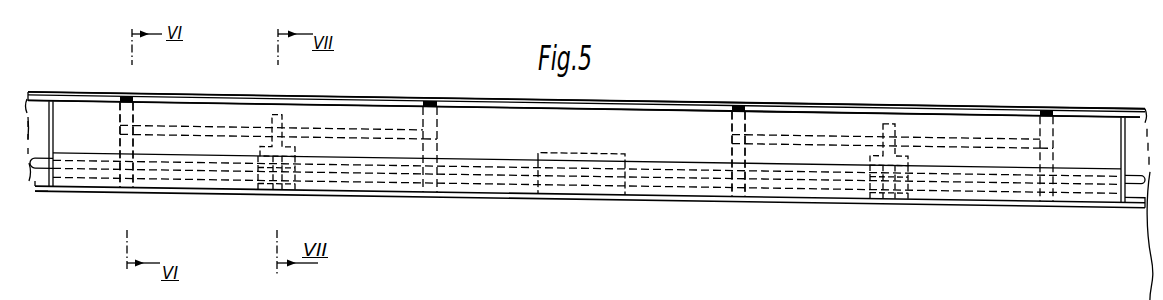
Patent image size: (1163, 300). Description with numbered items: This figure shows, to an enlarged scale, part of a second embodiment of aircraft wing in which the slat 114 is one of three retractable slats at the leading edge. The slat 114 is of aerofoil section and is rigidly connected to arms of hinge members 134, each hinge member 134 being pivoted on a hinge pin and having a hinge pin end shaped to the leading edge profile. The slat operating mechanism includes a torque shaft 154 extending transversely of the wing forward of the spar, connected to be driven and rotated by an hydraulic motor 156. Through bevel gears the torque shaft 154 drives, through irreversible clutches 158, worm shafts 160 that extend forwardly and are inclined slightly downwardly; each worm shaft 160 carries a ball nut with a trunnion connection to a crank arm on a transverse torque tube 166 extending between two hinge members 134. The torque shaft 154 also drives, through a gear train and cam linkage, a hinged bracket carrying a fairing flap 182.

The slat 114 is at (467, 110).
The hinge member 134 is at (128, 97).
The torque shaft 154 is at (195, 165).
The hydraulic motor 156 is at (582, 190).
The irreversible clutch 158 is at (280, 190).
The worm shaft 160 is at (277, 112).
The torque tube 166 is at (353, 126).
The fairing flap 182 is at (713, 190).